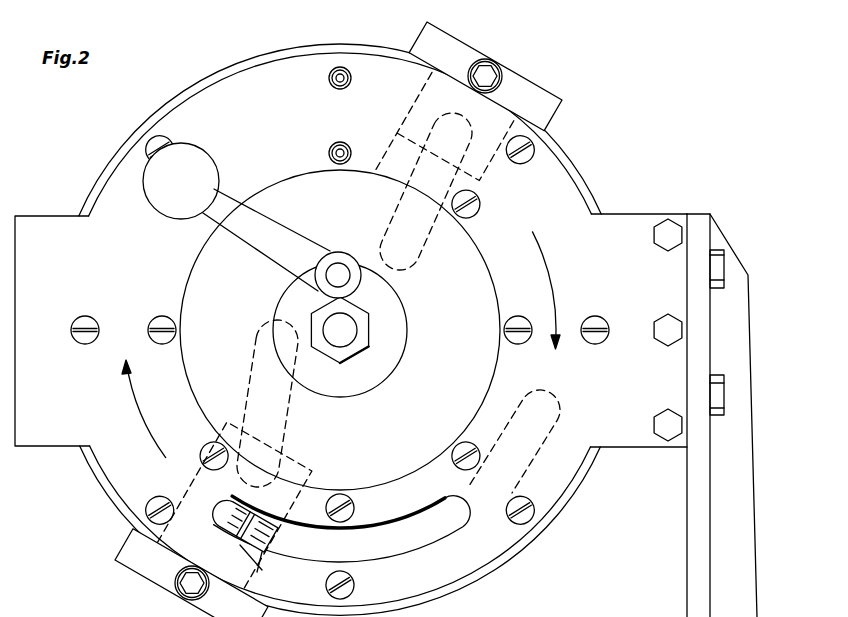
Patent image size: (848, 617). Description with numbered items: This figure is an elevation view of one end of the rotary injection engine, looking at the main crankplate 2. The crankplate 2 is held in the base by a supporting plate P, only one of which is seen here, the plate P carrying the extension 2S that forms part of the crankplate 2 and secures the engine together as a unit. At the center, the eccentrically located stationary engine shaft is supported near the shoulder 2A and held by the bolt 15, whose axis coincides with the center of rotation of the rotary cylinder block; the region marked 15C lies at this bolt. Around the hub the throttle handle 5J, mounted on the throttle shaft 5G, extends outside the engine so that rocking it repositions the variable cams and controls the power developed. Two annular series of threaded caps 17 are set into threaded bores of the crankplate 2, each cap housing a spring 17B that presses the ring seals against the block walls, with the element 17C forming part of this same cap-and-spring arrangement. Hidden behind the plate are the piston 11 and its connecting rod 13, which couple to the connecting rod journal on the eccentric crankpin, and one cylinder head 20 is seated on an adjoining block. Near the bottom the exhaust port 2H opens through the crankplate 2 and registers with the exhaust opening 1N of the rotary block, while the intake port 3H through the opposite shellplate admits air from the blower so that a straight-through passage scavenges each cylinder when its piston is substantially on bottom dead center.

The main crankplate 2 is at (545, 496).
The shoulder 2A is at (400, 316).
The exhaust port 2H is at (412, 547).
The extension 2S is at (68, 434).
The intake port 3H is at (553, 430).
The throttle shaft 5G is at (338, 273).
The throttle handle 5J is at (259, 224).
The piston 11 is at (315, 473).
The connecting rod 13 is at (287, 435).
The bolt 15 is at (357, 340).
The nut flat 15C is at (348, 357).
The threaded cap 17 is at (157, 318).
The spring 17B is at (329, 80).
The pivot pin 17C is at (329, 154).
The exhaust port 1N is at (255, 544).
The cylinder head 20 is at (455, 47).
The supporting plate P is at (688, 568).